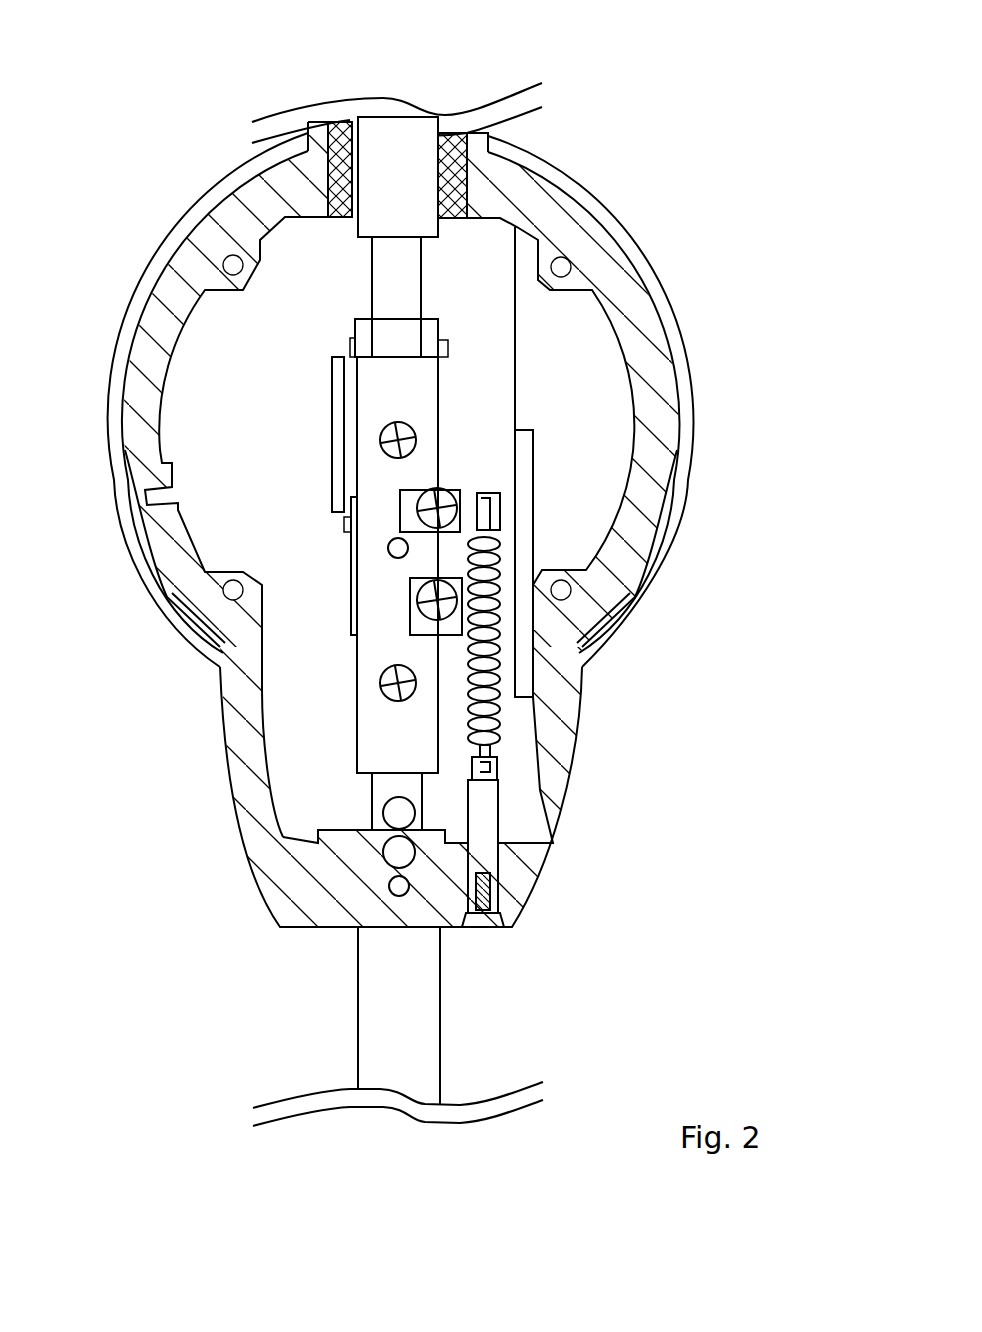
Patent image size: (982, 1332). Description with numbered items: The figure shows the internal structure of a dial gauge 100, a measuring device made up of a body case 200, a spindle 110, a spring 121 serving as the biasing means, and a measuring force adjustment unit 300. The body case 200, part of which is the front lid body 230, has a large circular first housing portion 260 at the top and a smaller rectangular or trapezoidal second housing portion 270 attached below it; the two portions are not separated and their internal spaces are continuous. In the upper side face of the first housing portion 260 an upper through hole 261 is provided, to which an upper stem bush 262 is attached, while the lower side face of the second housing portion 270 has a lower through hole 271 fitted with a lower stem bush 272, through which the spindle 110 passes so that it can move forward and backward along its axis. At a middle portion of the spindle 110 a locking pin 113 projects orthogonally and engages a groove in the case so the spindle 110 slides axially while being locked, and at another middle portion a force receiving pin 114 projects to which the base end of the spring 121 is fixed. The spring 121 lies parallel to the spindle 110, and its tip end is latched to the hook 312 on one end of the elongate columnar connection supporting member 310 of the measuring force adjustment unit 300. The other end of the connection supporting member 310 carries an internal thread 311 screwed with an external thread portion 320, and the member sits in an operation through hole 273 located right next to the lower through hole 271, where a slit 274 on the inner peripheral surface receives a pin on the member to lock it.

The dial gauge 100 is at (597, 130).
The spindle 110 is at (380, 790).
The locking pin 113 is at (440, 600).
The force receiving pin 114 is at (465, 495).
The spring 121 is at (495, 715).
The body case 200 is at (640, 265).
The front lid body 230 is at (232, 327).
The first housing portion 260 is at (575, 240).
The upper through hole 261 is at (368, 128).
The upper stem bush 262 is at (430, 135).
The second housing portion 270 is at (245, 728).
The lower through hole 271 is at (380, 913).
The lower stem bush 272 is at (365, 1025).
The operation through hole 273 is at (465, 915).
The slit 274 is at (556, 860).
The measuring force adjustment unit 300 is at (558, 858).
The connection supporting member 310 is at (488, 835).
The internal thread 311 is at (497, 870).
The hook 312 is at (498, 758).
The external thread portion 320 is at (488, 918).